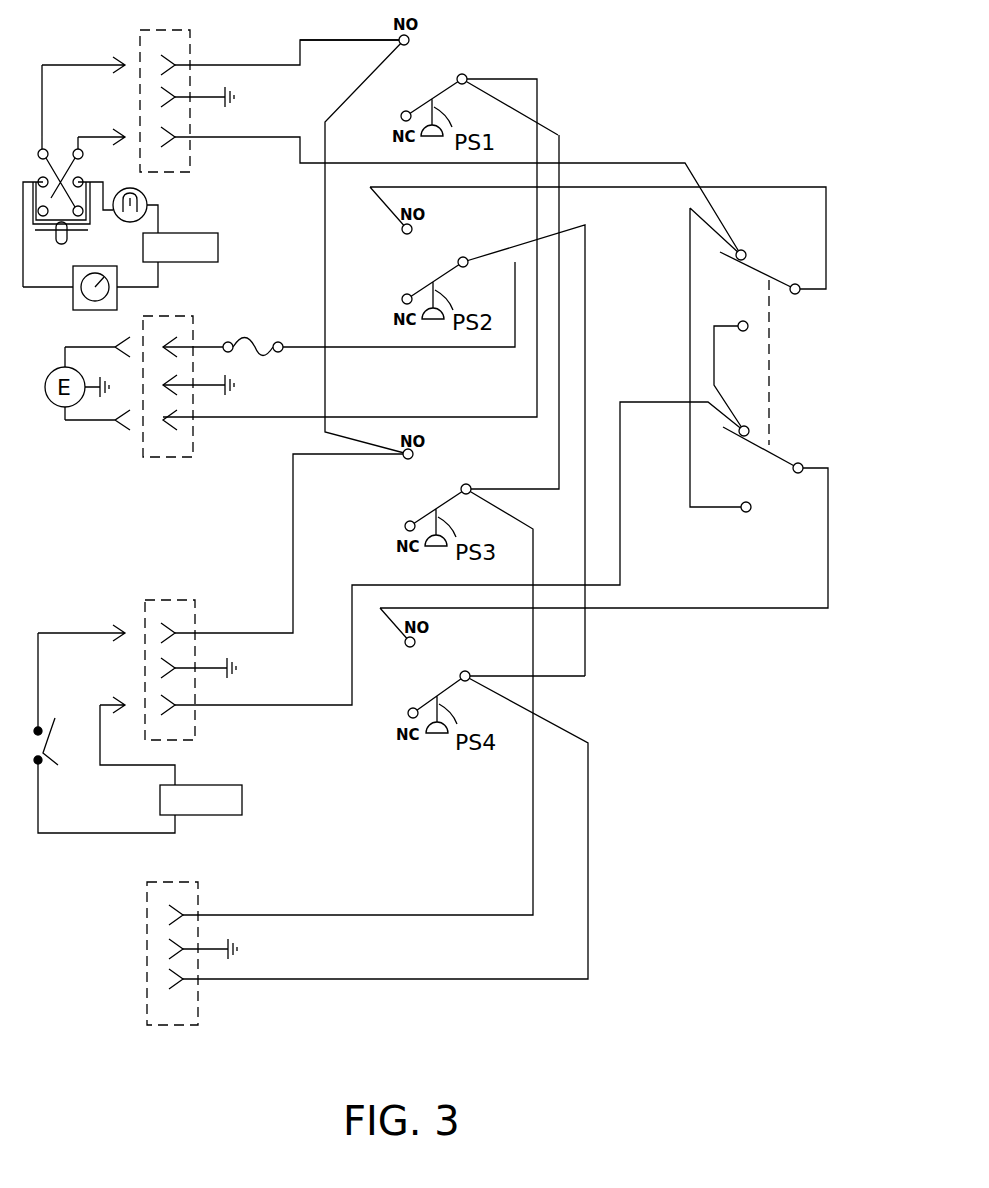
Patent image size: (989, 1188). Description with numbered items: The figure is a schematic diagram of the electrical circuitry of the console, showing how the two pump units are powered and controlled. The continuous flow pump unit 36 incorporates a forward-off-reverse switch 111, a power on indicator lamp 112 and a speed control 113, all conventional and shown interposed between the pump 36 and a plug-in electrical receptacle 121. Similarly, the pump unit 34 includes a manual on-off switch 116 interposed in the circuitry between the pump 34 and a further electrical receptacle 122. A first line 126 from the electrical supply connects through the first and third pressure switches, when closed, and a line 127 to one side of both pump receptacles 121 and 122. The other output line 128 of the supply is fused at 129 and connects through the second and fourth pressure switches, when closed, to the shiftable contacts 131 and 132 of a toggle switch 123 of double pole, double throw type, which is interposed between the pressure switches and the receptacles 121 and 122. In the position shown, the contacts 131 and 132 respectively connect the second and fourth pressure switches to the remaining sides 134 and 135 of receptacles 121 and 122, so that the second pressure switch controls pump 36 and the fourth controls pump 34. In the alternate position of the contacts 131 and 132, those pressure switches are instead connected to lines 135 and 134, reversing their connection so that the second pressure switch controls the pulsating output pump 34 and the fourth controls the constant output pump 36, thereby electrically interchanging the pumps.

The plug-in electrical receptacle 121 is at (160, 30).
The line 127 is at (242, 47).
The remaining side of pump receptacle 121 134 is at (272, 138).
The forward-off-reverse switch 111 is at (66, 232).
The power on indicator lamp 112 is at (148, 196).
The continuous flow pump unit 36 is at (218, 240).
The speed control 113 is at (73, 300).
The output line 128 is at (228, 340).
The fuse 129 is at (292, 330).
The first line 126 is at (500, 78).
The electrical receptacle 122 is at (157, 600).
The manual on-off switch 116 is at (53, 725).
The remaining side of pump receptacle 122 135 is at (272, 706).
The pump unit 34 is at (242, 790).
The toggle switch 123 is at (800, 360).
The shiftable contact 131 is at (755, 265).
The shiftable contact 132 is at (752, 442).